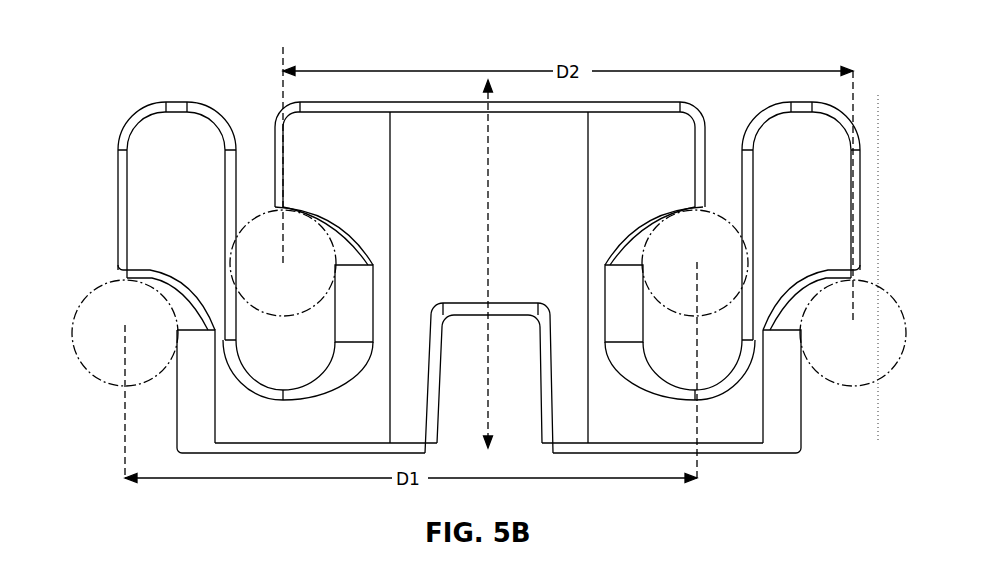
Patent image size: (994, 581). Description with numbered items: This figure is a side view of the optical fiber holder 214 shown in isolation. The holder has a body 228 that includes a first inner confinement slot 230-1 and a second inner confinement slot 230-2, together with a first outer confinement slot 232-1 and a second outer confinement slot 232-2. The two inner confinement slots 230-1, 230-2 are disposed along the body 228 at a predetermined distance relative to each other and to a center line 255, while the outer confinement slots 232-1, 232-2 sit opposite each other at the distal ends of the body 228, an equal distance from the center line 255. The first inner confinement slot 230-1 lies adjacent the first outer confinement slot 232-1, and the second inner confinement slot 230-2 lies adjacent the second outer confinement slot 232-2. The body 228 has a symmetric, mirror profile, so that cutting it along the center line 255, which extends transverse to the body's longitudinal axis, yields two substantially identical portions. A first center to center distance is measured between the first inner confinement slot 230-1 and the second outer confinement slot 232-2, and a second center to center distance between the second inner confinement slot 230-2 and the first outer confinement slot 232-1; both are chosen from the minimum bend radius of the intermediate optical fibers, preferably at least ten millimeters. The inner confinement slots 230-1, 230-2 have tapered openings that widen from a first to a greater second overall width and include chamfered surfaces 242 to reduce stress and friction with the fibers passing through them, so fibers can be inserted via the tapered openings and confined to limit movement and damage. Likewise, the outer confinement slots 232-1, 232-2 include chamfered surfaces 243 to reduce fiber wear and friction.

The optical fiber holder 214 is at (214, 68).
The body 228 is at (140, 128).
The first inner confinement slot 230-1 is at (828, 214).
The second inner confinement slot 230-2 is at (230, 176).
The first outer confinement slot 232-1 is at (840, 296).
The second outer confinement slot 232-2 is at (118, 286).
The chamfered surfaces 242 is at (343, 327).
The chamfered surfaces 243 is at (193, 407).
The center line 255 is at (487, 425).